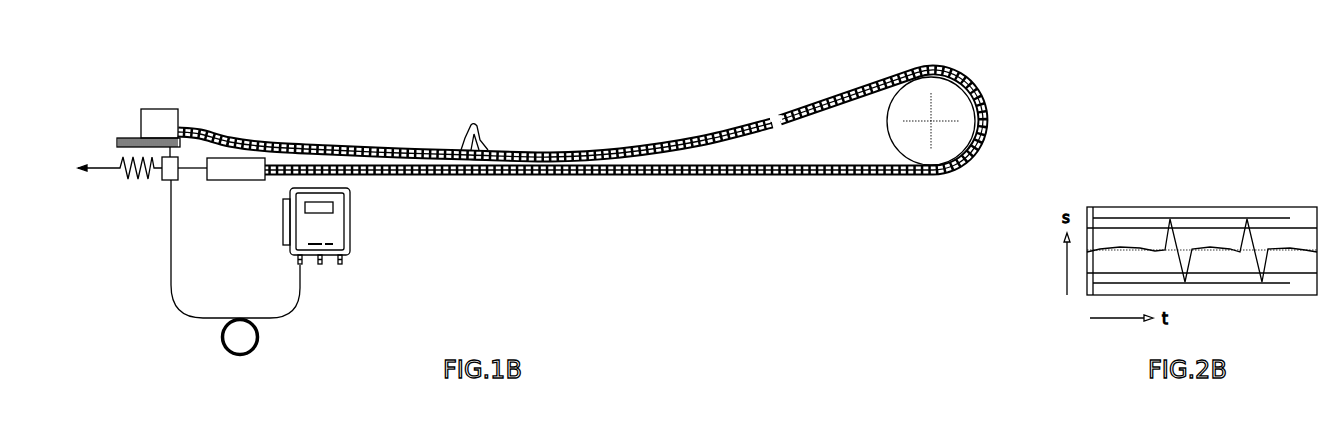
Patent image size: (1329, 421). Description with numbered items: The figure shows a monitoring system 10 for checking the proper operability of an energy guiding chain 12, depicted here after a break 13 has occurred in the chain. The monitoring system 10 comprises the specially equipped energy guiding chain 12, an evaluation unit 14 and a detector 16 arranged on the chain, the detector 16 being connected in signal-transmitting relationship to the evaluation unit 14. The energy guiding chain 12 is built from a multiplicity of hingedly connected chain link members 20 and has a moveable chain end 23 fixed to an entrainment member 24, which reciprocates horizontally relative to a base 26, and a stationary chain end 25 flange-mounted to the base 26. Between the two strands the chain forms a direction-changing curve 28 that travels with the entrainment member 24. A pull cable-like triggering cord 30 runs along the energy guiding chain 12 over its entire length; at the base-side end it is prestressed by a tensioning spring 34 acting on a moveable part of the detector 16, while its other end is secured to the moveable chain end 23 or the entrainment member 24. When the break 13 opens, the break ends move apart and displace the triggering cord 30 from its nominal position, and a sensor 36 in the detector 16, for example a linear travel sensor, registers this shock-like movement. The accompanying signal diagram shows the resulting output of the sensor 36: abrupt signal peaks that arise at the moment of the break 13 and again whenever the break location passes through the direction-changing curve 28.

The monitoring system 10 is at (556, 194).
The energy guiding chain 12 is at (580, 111).
The break 13 is at (624, 111).
The evaluation unit 14 is at (328, 217).
The detector 16 is at (189, 229).
The chain link members 20 is at (474, 124).
The moveable chain end 23 is at (211, 127).
The entrainment member 24 is at (167, 120).
The stationary chain end 25 is at (281, 162).
The base 26 is at (231, 159).
The direction-changing curve 28 is at (989, 72).
The triggering cord 30 is at (772, 118).
The tensioning spring 34 is at (128, 160).
The sensor 36 is at (160, 172).